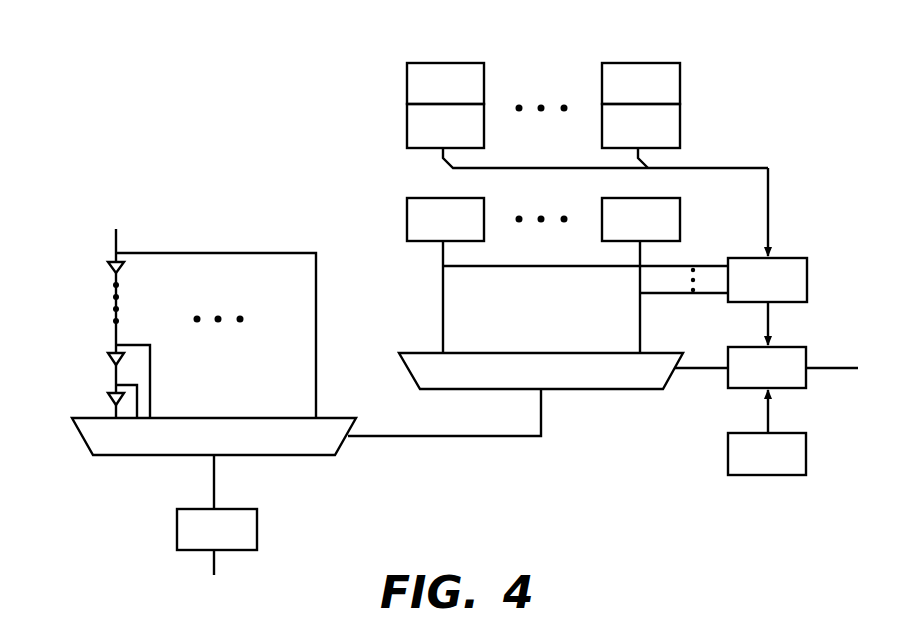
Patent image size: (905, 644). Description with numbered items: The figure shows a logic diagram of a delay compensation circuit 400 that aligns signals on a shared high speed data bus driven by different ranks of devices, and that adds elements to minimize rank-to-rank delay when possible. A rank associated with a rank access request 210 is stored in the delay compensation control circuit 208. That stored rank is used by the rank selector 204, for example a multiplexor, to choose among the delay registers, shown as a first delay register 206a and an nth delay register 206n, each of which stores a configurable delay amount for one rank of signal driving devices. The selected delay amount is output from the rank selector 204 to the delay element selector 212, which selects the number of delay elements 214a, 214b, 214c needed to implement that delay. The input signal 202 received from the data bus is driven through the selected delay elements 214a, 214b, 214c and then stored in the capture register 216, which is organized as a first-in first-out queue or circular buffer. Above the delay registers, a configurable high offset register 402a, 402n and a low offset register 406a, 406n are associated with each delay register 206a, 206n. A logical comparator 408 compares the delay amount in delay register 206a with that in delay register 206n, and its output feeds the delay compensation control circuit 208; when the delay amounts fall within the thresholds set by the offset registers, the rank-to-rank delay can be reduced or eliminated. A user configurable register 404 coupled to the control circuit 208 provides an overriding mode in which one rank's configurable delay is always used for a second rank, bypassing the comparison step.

The delay compensation circuit 400 is at (215, 133).
The input signal 202 is at (118, 240).
The delay element 214a is at (108, 269).
The delay element 214b is at (108, 359).
The delay element 214c is at (108, 399).
The delay element selector 212 is at (240, 449).
The capture register 216 is at (242, 544).
The rank selector 204 is at (566, 385).
The delay register 206a is at (414, 235).
The delay register 206n is at (609, 235).
The high offset register 402a is at (414, 99).
The high offset register 402n is at (609, 99).
The low offset register 406a is at (414, 140).
The low offset register 406n is at (609, 140).
The logical comparator 408 is at (744, 293).
The delay compensation control circuit 208 is at (743, 381).
The user configurable register 404 is at (743, 469).
The rank access request 210 is at (838, 363).